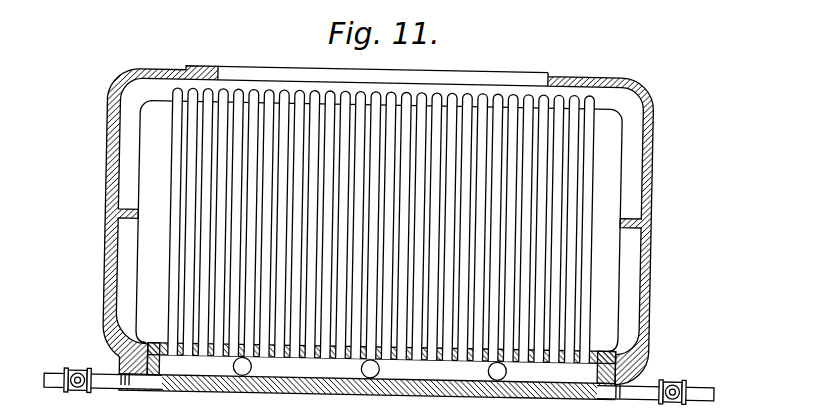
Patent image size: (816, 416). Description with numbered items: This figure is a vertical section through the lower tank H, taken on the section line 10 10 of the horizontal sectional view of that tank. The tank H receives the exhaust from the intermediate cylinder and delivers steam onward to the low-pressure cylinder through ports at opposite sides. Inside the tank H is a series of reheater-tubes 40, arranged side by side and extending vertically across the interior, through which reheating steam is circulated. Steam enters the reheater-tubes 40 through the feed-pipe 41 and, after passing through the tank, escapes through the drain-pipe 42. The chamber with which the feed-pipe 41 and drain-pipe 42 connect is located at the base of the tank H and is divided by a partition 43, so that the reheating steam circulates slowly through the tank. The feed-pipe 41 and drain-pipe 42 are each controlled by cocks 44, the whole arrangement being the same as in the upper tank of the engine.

The tank H is at (105, 161).
The section line 10 is at (173, 236).
The reheater-tubes 40 is at (171, 181).
The feed-pipe 41 is at (60, 379).
The drain-pipe 42 is at (655, 375).
The partition 43 is at (367, 371).
The cocks 44 is at (100, 375).